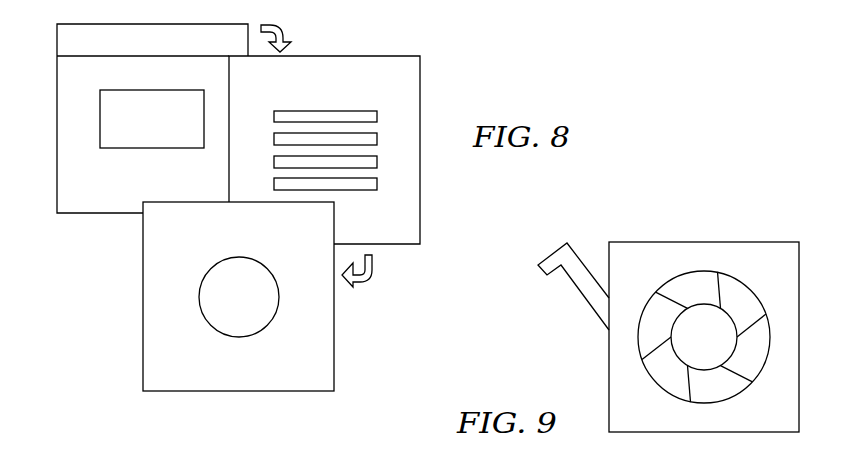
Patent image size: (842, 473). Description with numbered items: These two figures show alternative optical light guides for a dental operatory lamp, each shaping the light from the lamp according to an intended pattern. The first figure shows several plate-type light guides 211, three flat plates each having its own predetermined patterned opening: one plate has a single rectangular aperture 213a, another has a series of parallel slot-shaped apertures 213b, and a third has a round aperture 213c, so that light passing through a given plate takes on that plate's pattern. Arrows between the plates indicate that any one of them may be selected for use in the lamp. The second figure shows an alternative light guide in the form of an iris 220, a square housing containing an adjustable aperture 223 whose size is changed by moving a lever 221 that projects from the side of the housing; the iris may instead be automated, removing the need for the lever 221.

In FIG. 8, the plate-type light guides 211 is at (452, 67).
In FIG. 8, the aperture 213a is at (137, 148).
In FIG. 8, the aperture 213b is at (326, 111).
In FIG. 8, the aperture 213c is at (199, 298).
In FIG. 9, the iris 220 is at (676, 242).
In FIG. 9, the lever 221 is at (582, 300).
In FIG. 9, the adjustable aperture 223 is at (699, 292).